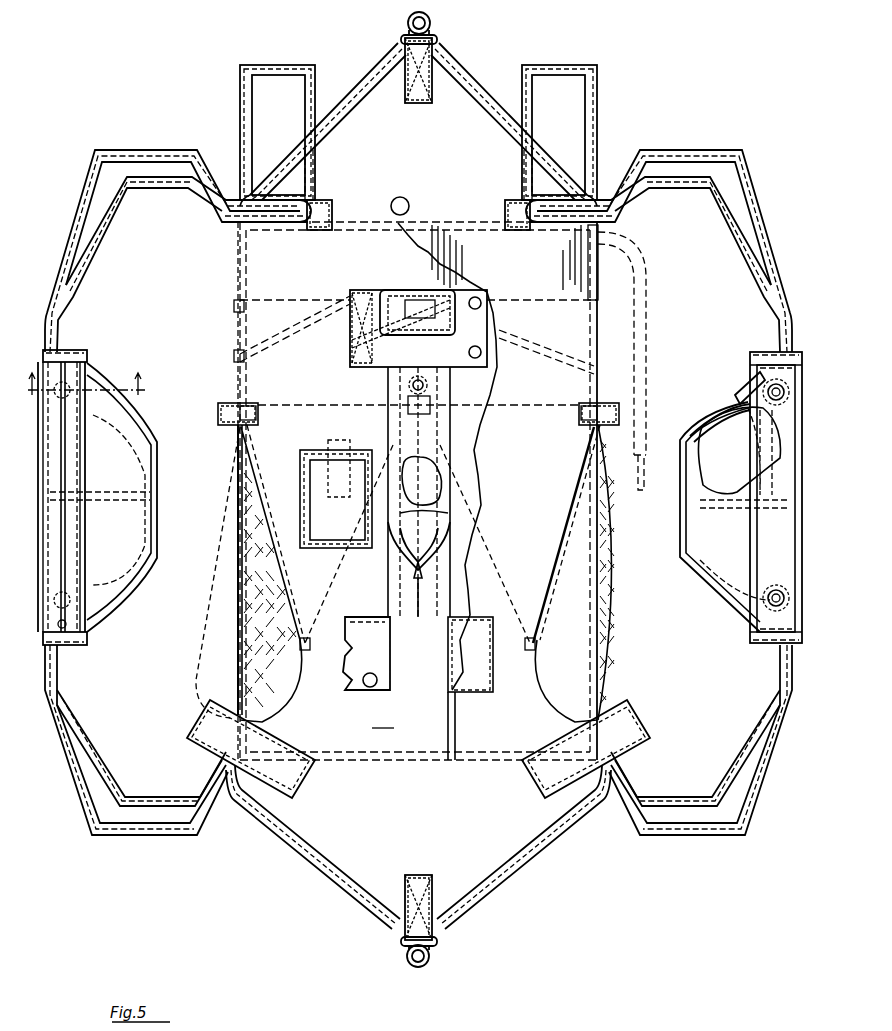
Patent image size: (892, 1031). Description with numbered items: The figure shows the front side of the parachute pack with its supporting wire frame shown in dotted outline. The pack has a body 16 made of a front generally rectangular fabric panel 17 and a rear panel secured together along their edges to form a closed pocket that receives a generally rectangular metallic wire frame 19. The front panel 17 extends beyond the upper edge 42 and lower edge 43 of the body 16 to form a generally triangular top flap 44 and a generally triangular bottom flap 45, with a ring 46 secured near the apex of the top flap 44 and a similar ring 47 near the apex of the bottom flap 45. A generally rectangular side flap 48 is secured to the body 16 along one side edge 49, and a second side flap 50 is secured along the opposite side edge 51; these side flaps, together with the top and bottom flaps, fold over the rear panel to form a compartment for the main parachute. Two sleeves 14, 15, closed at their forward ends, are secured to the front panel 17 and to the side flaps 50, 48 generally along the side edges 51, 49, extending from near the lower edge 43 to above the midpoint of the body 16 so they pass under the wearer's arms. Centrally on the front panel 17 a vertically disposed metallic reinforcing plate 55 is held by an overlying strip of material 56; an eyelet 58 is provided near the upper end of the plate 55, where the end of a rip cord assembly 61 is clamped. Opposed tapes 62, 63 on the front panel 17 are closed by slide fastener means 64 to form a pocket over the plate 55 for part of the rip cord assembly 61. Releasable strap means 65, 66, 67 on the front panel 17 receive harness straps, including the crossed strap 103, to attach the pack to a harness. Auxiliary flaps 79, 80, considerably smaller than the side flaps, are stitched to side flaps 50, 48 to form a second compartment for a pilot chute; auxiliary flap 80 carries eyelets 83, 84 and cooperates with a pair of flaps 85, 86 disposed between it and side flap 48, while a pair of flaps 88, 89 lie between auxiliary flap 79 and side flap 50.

The sleeve 14 is at (299, 698).
The sleeve 15 is at (543, 695).
The body 16 is at (322, 772).
The front generally rectangular fabric panel 17 is at (418, 491).
The generally rectangular metallic wire frame 19 is at (230, 335).
The upper edge 42 is at (364, 203).
The lower edge 43 is at (417, 765).
The top flap 44 is at (465, 82).
The bottom flap 45 is at (510, 854).
The ring 46 is at (431, 28).
The ring 47 is at (429, 958).
The side flap 48 is at (740, 750).
The side edge 49 is at (601, 286).
The side flap 50 is at (105, 756).
The side edge 51 is at (240, 284).
The reinforcing plate 55 is at (440, 478).
The strip of material 56 is at (445, 512).
The eyelet 58 is at (432, 386).
The rip cord assembly 61 is at (650, 258).
The tape 62 is at (396, 570).
The tape 63 is at (446, 550).
The slide fastener means 64 is at (424, 575).
The releasable strap means 65 is at (366, 690).
The releasable strap means 66 is at (452, 680).
The releasable strap means 67 is at (378, 366).
The auxiliary flap 79 is at (130, 440).
The auxiliary flap 80 is at (703, 566).
The eyelet 83 is at (758, 371).
The eyelet 84 is at (760, 597).
The flap 85 is at (726, 412).
The flap 86 is at (746, 490).
The flap 88 is at (150, 458).
The flap 89 is at (150, 535).
The crossed strap 103 is at (452, 745).